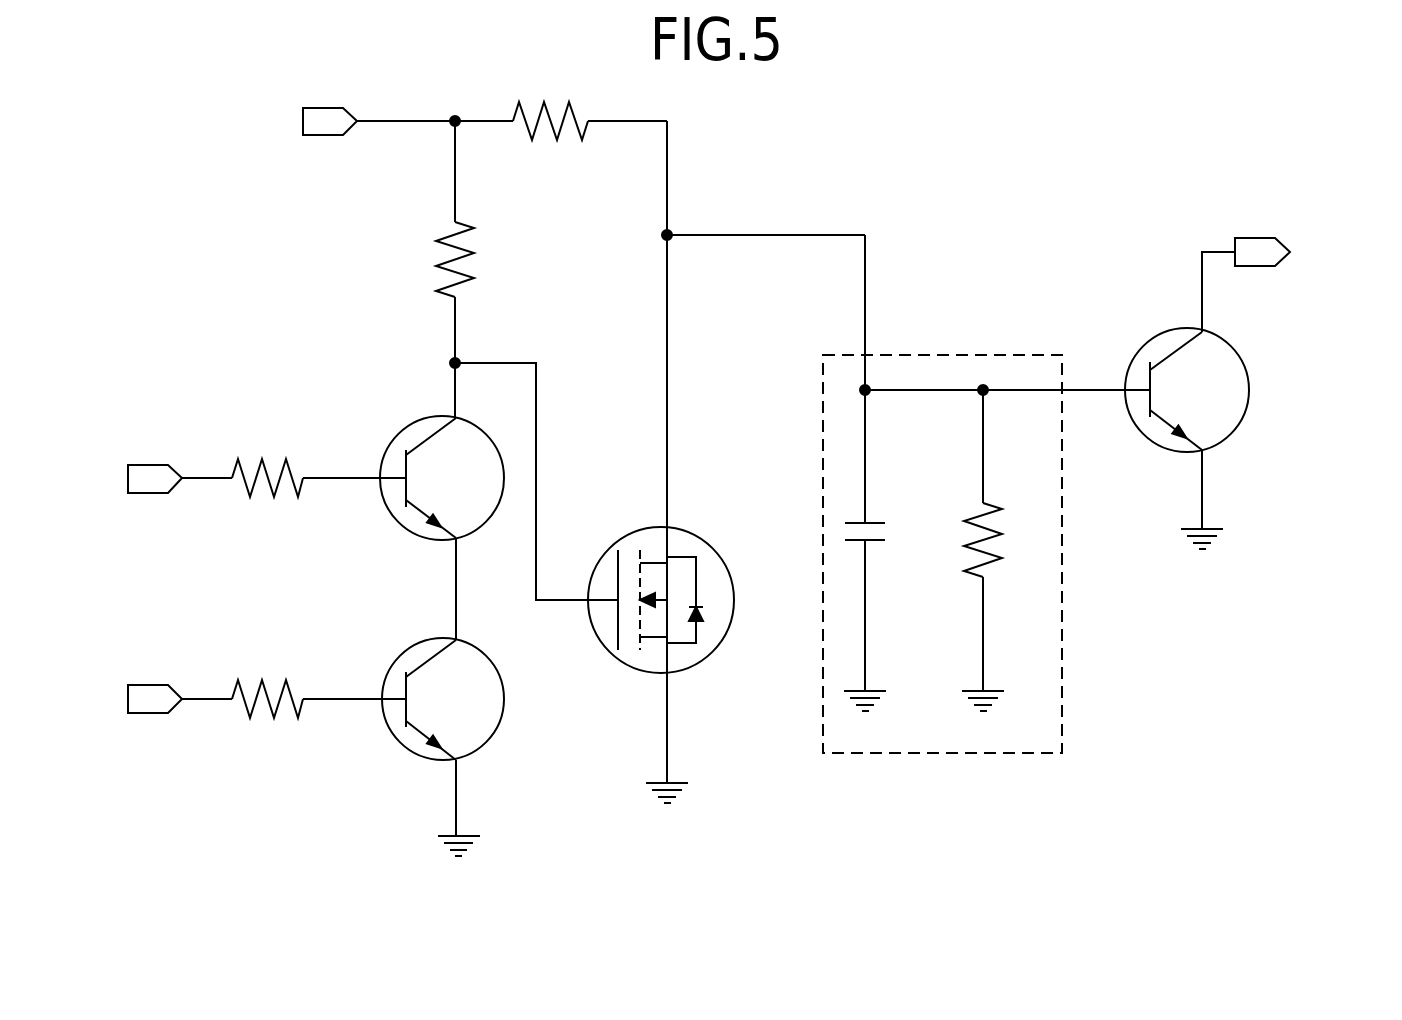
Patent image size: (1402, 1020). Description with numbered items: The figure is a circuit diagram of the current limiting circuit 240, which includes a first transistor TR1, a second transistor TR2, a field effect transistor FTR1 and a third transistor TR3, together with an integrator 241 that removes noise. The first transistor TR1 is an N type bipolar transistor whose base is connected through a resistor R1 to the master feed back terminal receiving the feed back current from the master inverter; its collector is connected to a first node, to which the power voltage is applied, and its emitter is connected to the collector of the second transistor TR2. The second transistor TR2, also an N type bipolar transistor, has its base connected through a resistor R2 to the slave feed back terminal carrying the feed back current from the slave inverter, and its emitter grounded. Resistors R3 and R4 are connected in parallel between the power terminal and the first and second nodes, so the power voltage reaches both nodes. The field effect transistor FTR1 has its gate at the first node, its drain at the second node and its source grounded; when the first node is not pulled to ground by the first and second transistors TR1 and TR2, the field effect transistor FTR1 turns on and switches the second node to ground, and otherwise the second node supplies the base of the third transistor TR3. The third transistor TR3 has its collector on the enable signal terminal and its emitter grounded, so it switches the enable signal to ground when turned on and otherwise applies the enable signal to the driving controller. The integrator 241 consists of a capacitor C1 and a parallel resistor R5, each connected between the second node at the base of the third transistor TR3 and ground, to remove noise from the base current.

The current limiting circuit 240 is at (762, 124).
The integrator 241 is at (943, 753).
The resistor R1 is at (267, 459).
The resistor R2 is at (267, 681).
The resistor R3 is at (431, 259).
The resistor R4 is at (550, 139).
The resistor R5 is at (1005, 540).
The capacitor C1 is at (884, 534).
The first transistor TR1 is at (424, 484).
The second transistor TR2 is at (424, 705).
The third transistor TR3 is at (1175, 398).
The field effect transistor FTR1 is at (683, 599).